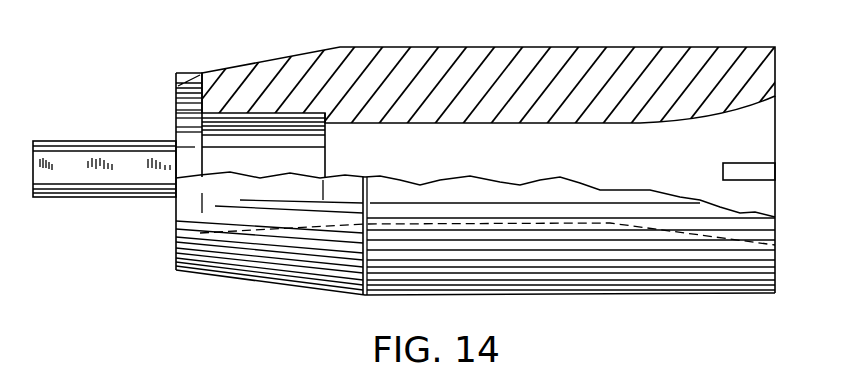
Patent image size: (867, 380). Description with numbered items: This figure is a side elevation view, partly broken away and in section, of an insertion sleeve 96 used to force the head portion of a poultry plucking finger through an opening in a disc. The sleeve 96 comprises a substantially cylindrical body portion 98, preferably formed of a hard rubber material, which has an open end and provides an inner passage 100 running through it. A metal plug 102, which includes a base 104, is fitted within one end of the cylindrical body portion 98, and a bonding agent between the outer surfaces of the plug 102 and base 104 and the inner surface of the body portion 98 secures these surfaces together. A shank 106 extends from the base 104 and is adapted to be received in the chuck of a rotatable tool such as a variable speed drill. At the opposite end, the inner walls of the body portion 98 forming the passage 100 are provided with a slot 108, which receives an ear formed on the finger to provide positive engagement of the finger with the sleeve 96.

The sleeve 96 is at (602, 300).
The cylindrical body portion 98 is at (548, 48).
The inner passage 100 is at (590, 163).
The metal plug 102 is at (305, 163).
The base 104 is at (175, 93).
The shank 106 is at (107, 145).
The slot 108 is at (766, 170).